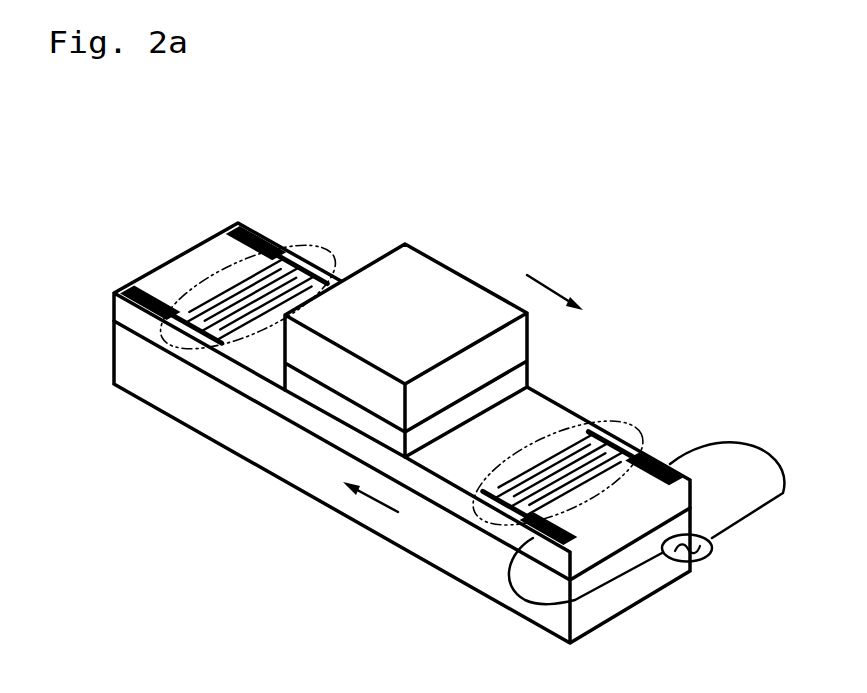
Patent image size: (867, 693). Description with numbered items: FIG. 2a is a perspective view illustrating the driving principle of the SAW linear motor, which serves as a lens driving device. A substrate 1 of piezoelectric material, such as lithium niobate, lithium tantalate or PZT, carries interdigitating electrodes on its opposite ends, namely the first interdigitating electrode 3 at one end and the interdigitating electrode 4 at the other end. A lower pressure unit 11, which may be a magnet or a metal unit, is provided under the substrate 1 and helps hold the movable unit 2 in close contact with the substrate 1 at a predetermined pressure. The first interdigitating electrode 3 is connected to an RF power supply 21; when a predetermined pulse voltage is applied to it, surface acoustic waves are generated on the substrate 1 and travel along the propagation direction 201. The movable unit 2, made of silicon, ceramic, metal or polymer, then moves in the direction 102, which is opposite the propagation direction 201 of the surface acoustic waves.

The substrate 1 is at (333, 428).
The lower pressure unit 11 is at (463, 562).
The movable unit 2 is at (313, 393).
The first interdigitating electrode 3 is at (627, 423).
The interdigitating electrode 4 is at (312, 247).
The RF power supply 21 is at (646, 523).
The direction 102 is at (568, 276).
The propagation direction 201 is at (362, 493).